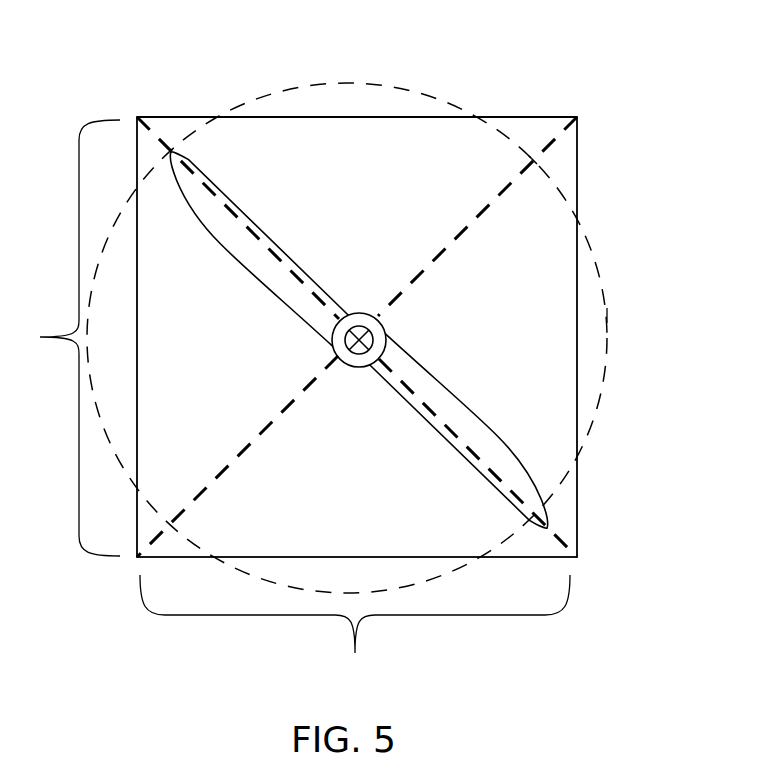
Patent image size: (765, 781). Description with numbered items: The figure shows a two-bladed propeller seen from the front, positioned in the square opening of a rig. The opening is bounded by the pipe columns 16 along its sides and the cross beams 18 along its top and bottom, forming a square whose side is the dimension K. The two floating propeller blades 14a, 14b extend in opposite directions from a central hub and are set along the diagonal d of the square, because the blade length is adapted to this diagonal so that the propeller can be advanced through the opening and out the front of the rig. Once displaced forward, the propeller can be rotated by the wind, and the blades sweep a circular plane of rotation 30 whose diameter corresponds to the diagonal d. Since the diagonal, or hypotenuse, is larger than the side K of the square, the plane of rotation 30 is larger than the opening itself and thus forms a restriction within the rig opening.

The propeller blade 14a is at (263, 228).
The propeller blade 14b is at (503, 467).
The pipe column 16 is at (577, 240).
The cross beam 18 is at (230, 117).
The plane of rotation 30 is at (267, 97).
The diagonal d is at (293, 260).
The square side K is at (294, 400).